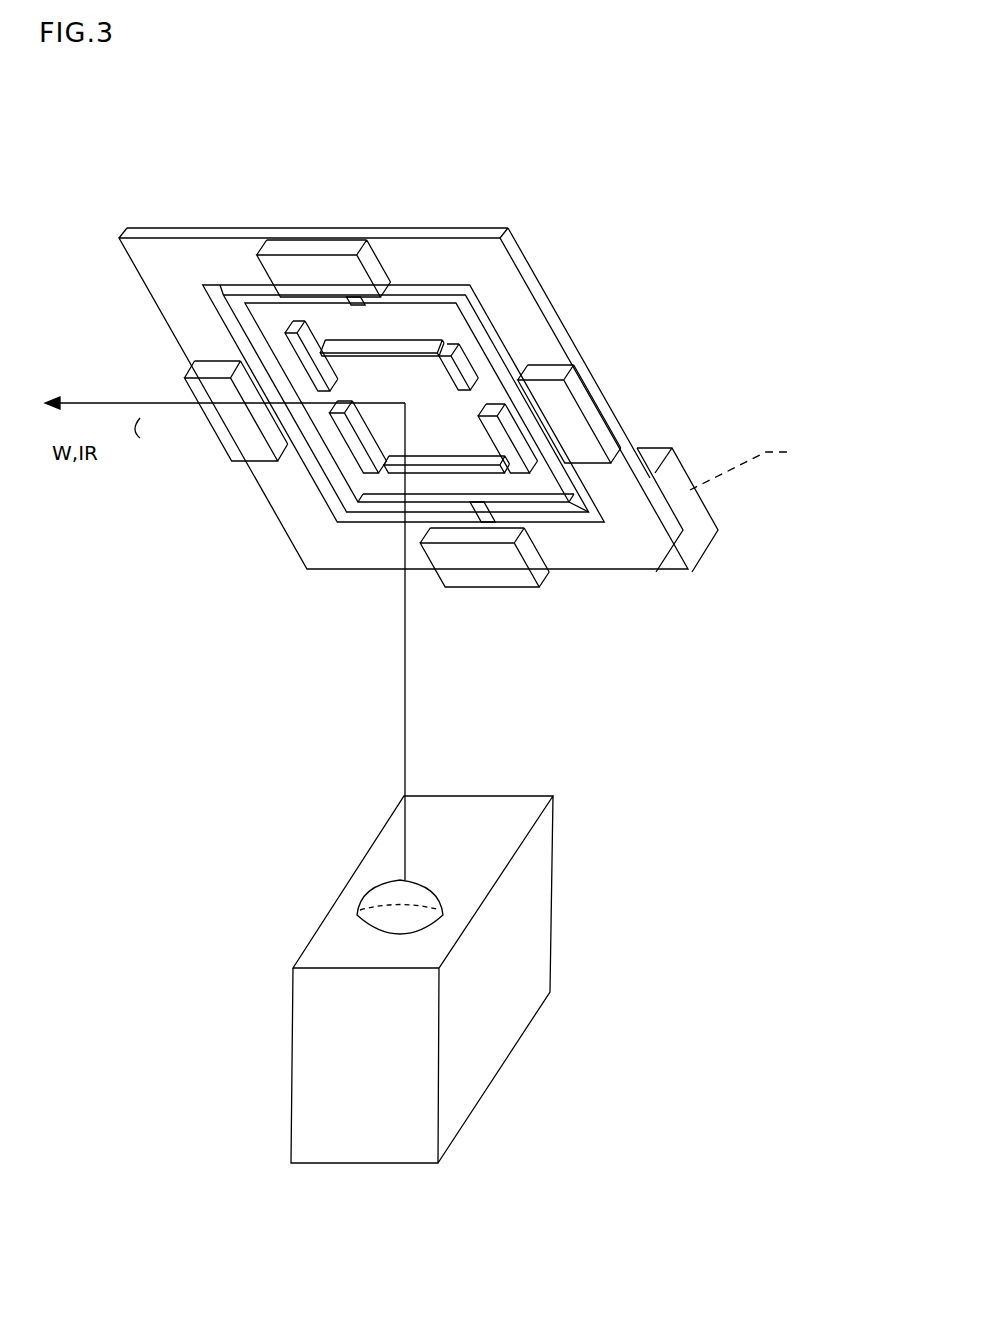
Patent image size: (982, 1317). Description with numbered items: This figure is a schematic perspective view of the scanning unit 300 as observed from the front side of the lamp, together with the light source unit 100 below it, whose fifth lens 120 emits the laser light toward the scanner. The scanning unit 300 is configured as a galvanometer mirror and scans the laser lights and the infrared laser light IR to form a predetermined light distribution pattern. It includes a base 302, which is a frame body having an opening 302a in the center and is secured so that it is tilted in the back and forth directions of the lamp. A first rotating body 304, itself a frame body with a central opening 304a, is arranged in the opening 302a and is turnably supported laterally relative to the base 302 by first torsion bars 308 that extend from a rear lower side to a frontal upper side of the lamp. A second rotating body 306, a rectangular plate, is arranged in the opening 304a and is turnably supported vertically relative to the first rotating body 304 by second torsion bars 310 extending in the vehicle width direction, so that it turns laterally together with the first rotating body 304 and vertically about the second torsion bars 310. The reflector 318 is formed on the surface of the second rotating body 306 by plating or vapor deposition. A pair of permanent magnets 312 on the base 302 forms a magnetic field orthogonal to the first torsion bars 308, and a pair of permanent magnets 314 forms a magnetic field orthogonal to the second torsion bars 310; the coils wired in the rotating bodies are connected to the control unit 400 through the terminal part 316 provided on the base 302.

The light source unit 100 is at (553, 905).
The fifth lens 120 is at (372, 900).
The scanning unit 300 is at (556, 148).
The base 302 is at (148, 232).
The opening 302a is at (222, 305).
The first rotating body 304 is at (490, 337).
The opening 304a is at (515, 470).
The second rotating body 306 is at (410, 345).
The first torsion bars 308 is at (383, 310).
The second torsion bars 310 is at (480, 405).
The permanent magnets 312 is at (230, 437).
The permanent magnets 314 is at (300, 268).
The terminal part 316 is at (717, 540).
The reflector 318 is at (395, 440).
The control unit 400 is at (801, 443).